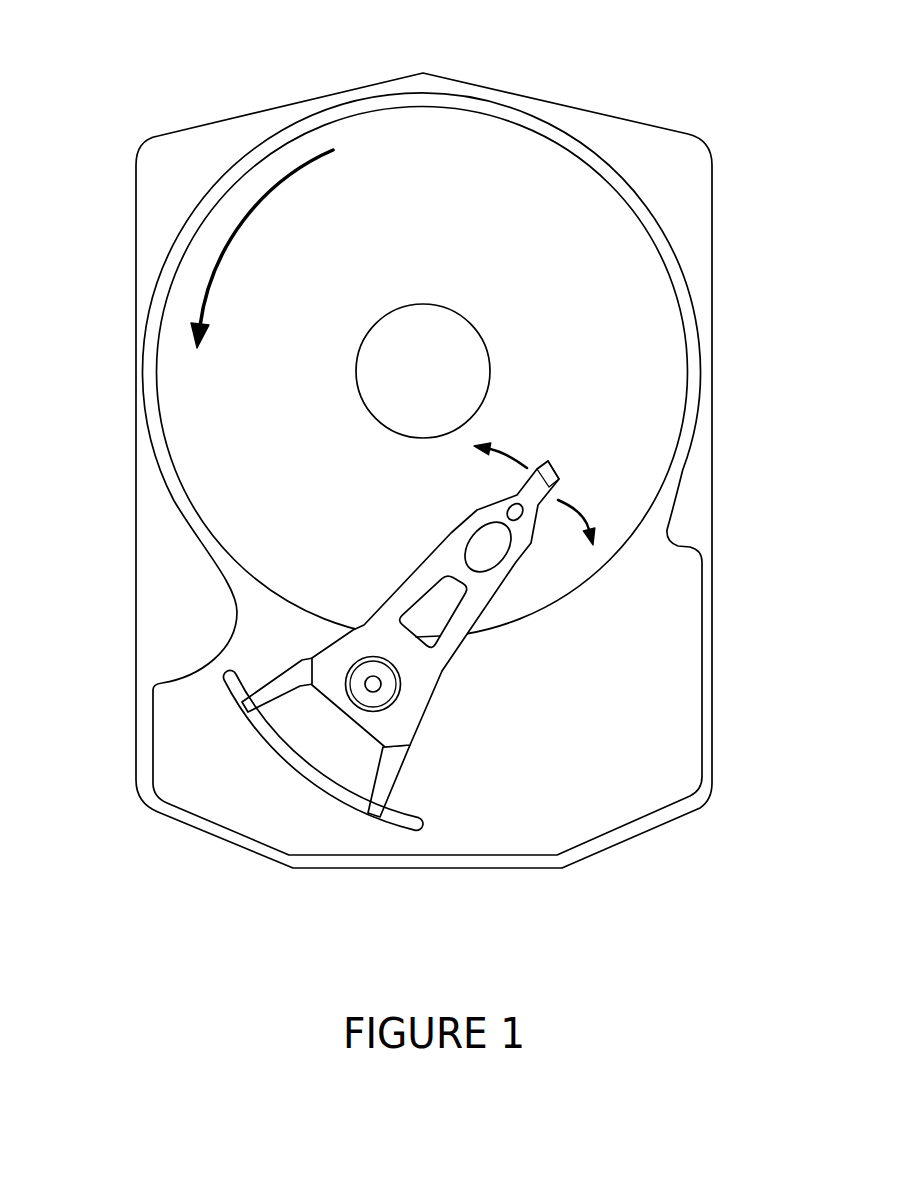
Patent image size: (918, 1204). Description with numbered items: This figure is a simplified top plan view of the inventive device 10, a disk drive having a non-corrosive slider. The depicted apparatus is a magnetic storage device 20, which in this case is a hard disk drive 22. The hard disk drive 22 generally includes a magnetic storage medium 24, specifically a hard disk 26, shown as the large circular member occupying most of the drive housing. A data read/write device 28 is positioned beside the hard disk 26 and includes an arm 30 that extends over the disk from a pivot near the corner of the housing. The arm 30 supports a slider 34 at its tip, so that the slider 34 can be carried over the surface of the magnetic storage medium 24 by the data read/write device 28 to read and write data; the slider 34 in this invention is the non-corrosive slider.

The inventive device 10 is at (261, 62).
The magnetic storage device 20 is at (193, 102).
The hard disk drive 22 is at (102, 256).
The magnetic storage medium 24 is at (623, 270).
The hard disk 26 is at (617, 347).
The data read/write device 28 is at (586, 446).
The arm 30 is at (538, 504).
The slider 34 is at (558, 469).